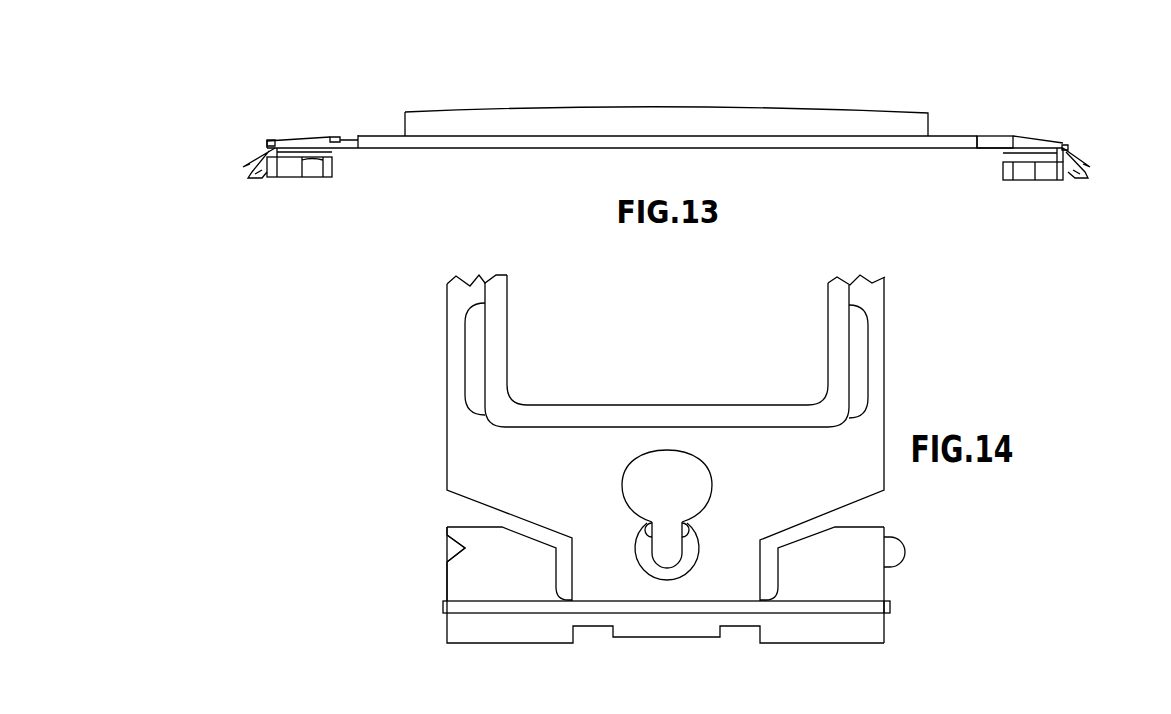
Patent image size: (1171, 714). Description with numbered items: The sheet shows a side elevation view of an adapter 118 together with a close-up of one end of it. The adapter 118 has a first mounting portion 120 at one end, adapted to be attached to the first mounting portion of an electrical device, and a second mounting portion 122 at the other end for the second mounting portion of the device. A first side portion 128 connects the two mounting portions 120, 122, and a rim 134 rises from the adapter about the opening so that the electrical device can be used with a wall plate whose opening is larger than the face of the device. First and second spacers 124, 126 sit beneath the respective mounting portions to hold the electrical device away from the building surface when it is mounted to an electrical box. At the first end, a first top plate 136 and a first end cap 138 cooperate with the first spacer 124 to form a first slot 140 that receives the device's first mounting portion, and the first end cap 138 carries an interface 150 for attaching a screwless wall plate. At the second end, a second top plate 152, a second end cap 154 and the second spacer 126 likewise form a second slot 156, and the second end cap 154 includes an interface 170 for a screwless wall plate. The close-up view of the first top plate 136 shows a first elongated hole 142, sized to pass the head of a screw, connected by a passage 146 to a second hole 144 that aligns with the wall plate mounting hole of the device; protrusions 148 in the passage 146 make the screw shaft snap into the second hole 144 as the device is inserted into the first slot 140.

In FIG. 13, the adapter 118 is at (877, 95).
In FIG. 14, the adapter 118 is at (427, 356).
In FIG. 13, the first mounting portion 120 is at (932, 191).
In FIG. 13, the second mounting portion 122 is at (248, 190).
In FIG. 13, the first spacer 124 is at (1050, 173).
In FIG. 13, the second spacer 126 is at (286, 172).
In FIG. 13, the first side portion 128 is at (667, 148).
In FIG. 13, the rim 134 is at (667, 117).
In FIG. 13, the first top plate 136 is at (995, 143).
In FIG. 14, the first top plate 136 is at (778, 457).
In FIG. 13, the first end cap 138 is at (1066, 145).
In FIG. 13, the first slot 140 is at (1007, 155).
In FIG. 14, the first elongated hole 142 is at (700, 483).
In FIG. 14, the second hole 144 is at (666, 557).
In FIG. 14, the passage 146 is at (667, 530).
In FIG. 14, the protrusions 148 is at (690, 538).
In FIG. 13, the interface 150 is at (1098, 135).
In FIG. 13, the second top plate 152 is at (335, 137).
In FIG. 13, the second end cap 154 is at (268, 140).
In FIG. 13, the second slot 156 is at (323, 152).
In FIG. 13, the interface 170 is at (240, 133).
In FIG. 14, the interface 170 is at (425, 430).